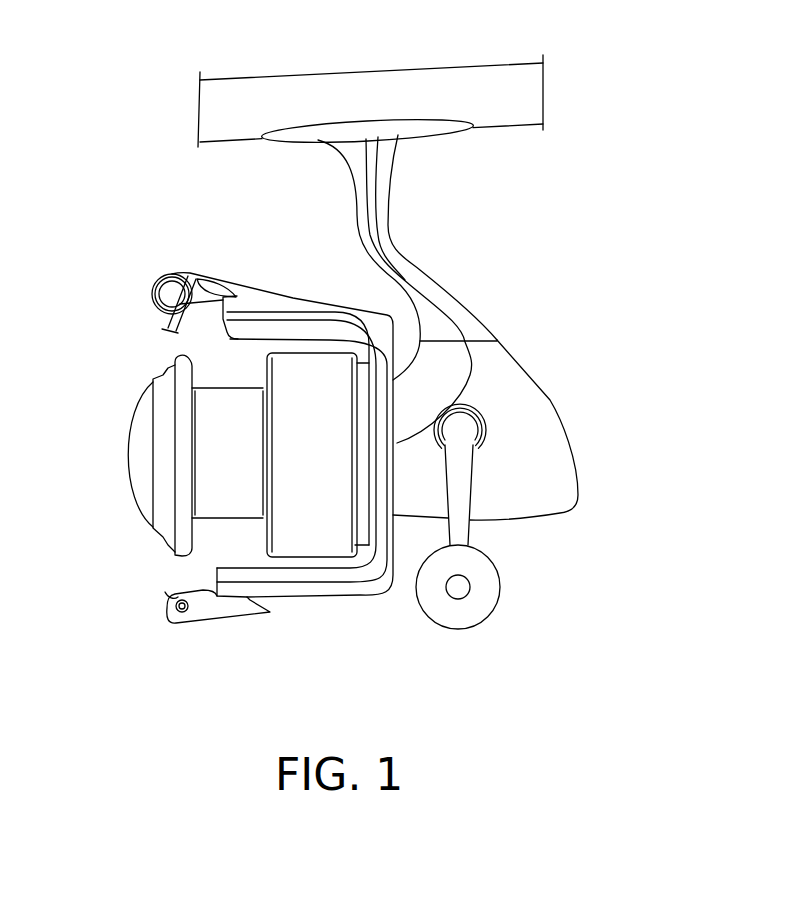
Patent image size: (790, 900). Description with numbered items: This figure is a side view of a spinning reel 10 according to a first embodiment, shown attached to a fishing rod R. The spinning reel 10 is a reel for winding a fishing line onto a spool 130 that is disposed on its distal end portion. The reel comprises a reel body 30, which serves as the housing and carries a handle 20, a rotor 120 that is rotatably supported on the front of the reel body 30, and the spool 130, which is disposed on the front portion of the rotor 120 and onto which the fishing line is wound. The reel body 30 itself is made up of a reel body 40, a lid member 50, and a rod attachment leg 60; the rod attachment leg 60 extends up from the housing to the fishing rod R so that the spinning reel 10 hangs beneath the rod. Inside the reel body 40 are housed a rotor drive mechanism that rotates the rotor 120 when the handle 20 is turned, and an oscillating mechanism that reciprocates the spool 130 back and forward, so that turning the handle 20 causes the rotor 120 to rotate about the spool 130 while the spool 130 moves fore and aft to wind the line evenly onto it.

The fishing rod R is at (433, 69).
The spinning reel 10 is at (127, 220).
The handle 20 is at (497, 565).
The reel body 30 is at (543, 262).
The reel body 40 is at (550, 400).
The lid member 50 is at (498, 392).
The rod attachment leg 60 is at (417, 252).
The rotor 120 is at (322, 603).
The spool 130 is at (230, 520).